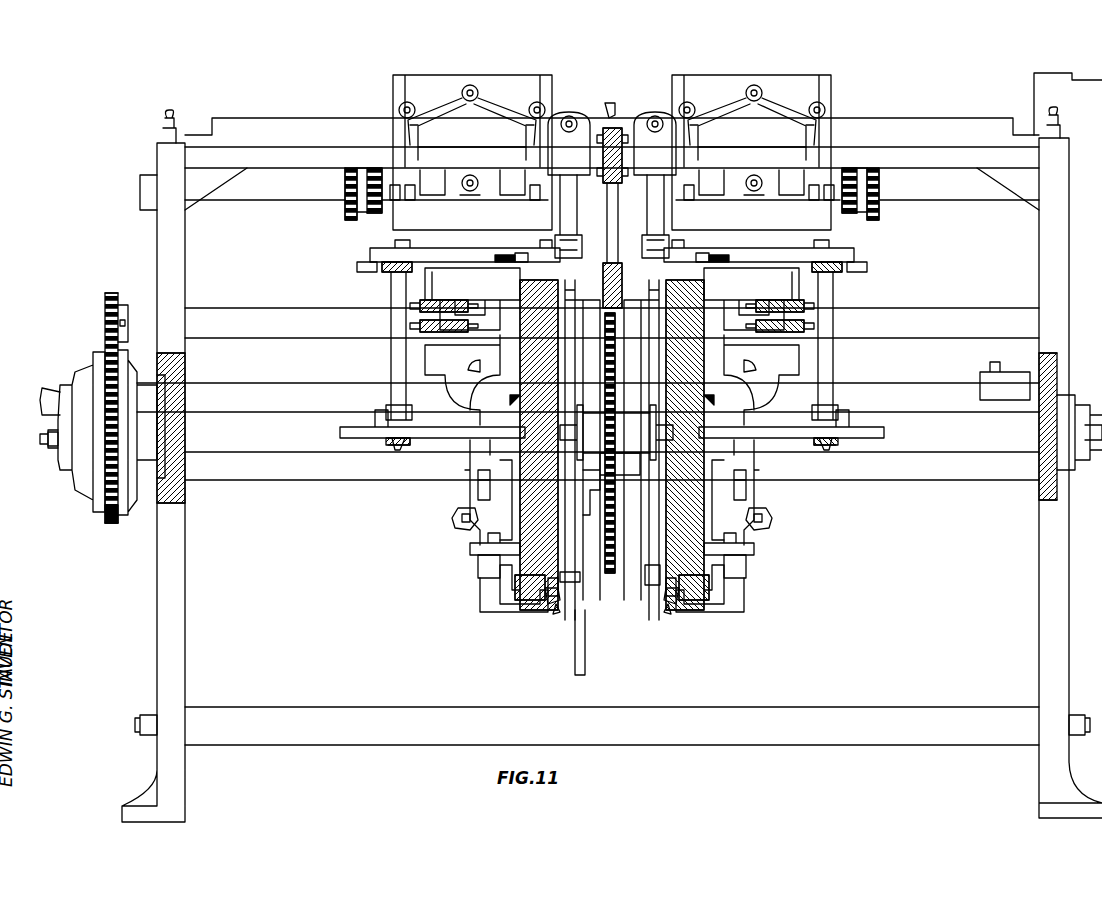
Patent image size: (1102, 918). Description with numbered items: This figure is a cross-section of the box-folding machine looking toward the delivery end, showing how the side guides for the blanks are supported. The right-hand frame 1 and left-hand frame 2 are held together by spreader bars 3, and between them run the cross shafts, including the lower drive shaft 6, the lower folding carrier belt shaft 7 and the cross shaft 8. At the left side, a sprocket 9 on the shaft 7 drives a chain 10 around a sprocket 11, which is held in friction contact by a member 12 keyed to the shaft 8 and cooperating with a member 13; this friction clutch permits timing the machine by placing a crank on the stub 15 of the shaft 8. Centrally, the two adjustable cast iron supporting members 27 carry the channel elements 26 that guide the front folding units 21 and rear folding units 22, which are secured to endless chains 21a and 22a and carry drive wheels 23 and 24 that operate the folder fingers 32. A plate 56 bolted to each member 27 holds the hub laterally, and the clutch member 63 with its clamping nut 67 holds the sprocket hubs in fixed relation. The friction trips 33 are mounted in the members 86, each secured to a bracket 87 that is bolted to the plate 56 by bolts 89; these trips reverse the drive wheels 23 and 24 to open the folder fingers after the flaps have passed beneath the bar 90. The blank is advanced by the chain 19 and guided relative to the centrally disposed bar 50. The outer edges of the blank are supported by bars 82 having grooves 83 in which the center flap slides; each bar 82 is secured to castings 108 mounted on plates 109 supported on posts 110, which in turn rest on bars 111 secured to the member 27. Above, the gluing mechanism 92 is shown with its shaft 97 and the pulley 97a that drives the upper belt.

The right-hand frame 1 is at (1032, 553).
The left-hand frame 2 is at (168, 568).
The spreader bars 3 is at (383, 478).
The lower drive shaft 6 is at (282, 402).
The lower folding carrier belt shaft 7 is at (265, 322).
The cross shaft 8 is at (300, 438).
The sprocket 9 is at (106, 322).
The chain 10 is at (105, 346).
The sprocket 11 is at (105, 523).
The friction member 12 is at (125, 512).
The clutch member 13 is at (88, 467).
The stub 15 is at (44, 434).
The chain 19 is at (616, 518).
The front folding unit 21 is at (497, 593).
The endless chain 21a is at (666, 580).
The rear folding unit 22 is at (490, 282).
The endless chain 22a is at (672, 560).
The drive wheel 23 is at (480, 550).
The drive wheel 24 is at (480, 566).
The channel element 26 is at (522, 600).
The supporting member 27 is at (700, 374).
The folder finger 32 is at (617, 272).
The friction trip 33 is at (650, 468).
The centrally disposed bar 50 is at (616, 122).
The plate 56 is at (650, 418).
The clutch member 63 is at (478, 485).
The clamping nut 67 is at (468, 525).
The bar 82 is at (503, 254).
The groove 83 is at (520, 252).
The member 86 is at (440, 318).
The bracket 87 is at (445, 372).
The bolts 89 is at (480, 475).
The bar 90 is at (572, 246).
The gluing mechanism 92 is at (518, 90).
The shaft 97 is at (322, 188).
The pulley 97a is at (608, 108).
The castings 108 is at (382, 256).
The plates 109 is at (357, 266).
The posts 110 is at (392, 352).
The bars 111 is at (380, 438).